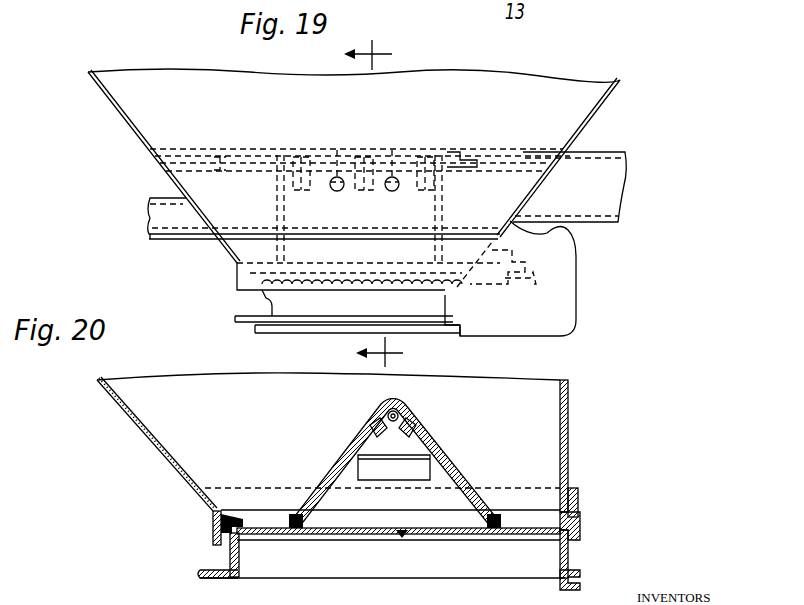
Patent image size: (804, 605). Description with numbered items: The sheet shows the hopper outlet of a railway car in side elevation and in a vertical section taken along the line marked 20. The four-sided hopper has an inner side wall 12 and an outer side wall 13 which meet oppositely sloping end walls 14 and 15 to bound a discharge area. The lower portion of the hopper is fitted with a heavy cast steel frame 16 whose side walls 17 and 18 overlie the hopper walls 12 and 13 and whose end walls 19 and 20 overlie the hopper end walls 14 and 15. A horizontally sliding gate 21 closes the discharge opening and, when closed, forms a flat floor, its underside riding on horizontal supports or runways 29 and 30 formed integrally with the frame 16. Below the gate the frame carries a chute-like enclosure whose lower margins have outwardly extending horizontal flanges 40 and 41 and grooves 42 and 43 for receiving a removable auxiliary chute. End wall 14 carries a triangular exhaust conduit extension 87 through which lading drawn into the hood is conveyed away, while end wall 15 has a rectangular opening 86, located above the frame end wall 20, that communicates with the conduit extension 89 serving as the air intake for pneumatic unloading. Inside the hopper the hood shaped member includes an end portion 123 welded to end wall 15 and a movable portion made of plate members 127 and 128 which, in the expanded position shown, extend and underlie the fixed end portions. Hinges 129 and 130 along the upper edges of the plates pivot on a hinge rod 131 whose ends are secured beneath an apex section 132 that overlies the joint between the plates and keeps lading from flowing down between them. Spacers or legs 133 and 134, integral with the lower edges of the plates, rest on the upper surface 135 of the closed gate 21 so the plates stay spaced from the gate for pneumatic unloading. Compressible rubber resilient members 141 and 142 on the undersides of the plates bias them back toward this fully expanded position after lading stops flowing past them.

In FIG. 20, the inner side wall 12 is at (569, 403).
In FIG. 19, the outer side wall 13 is at (490, 106).
In FIG. 20, the outer side wall 13 is at (148, 438).
In FIG. 19, the end wall 14 is at (612, 92).
In FIG. 19, the end wall 15 is at (115, 110).
In FIG. 19, the frame 16 is at (214, 270).
In FIG. 20, the frame 16 is at (184, 528).
In FIG. 20, the side wall 17 is at (574, 502).
In FIG. 19, the side wall 18 is at (482, 265).
In FIG. 20, the side wall 18 is at (202, 500).
In FIG. 19, the end wall 19 is at (498, 250).
In FIG. 19, the end wall 20 is at (235, 244).
In FIG. 20, the end wall 20 is at (530, 497).
In FIG. 19, the horizontally sliding gate 21 is at (462, 250).
In FIG. 20, the horizontally sliding gate 21 is at (523, 525).
In FIG. 20, the support or runway 29 is at (222, 547).
In FIG. 20, the support or runway 30 is at (574, 543).
In FIG. 19, the horizontal flange 40 is at (237, 318).
In FIG. 20, the horizontal flange 41 is at (200, 573).
In FIG. 19, the groove 42 is at (462, 326).
In FIG. 19, the groove 43 is at (317, 326).
In FIG. 20, the groove 43 is at (562, 578).
In FIG. 20, the rectangular opening 86 is at (414, 467).
In FIG. 19, the conduit extension 87 is at (633, 147).
In FIG. 19, the conduit extension 89 is at (132, 188).
In FIG. 20, the end portion 123 is at (438, 440).
In FIG. 20, the plate member 127 is at (457, 467).
In FIG. 19, the plate member 128 is at (287, 212).
In FIG. 20, the plate member 128 is at (340, 455).
In FIG. 19, the hinge 129 is at (294, 150).
In FIG. 20, the hinge 129 is at (416, 416).
In FIG. 19, the hinge 130 is at (366, 192).
In FIG. 20, the hinge 130 is at (376, 418).
In FIG. 19, the hinge rod 131 is at (458, 160).
In FIG. 20, the hinge rod 131 is at (392, 405).
In FIG. 19, the apex section 132 is at (512, 150).
In FIG. 20, the spacer or leg 133 is at (489, 505).
In FIG. 20, the spacer or leg 134 is at (293, 510).
In FIG. 20, the upper surface 135 is at (365, 518).
In FIG. 20, the resilient member 141 is at (425, 424).
In FIG. 19, the resilient member 142 is at (328, 152).
In FIG. 20, the resilient member 142 is at (357, 433).